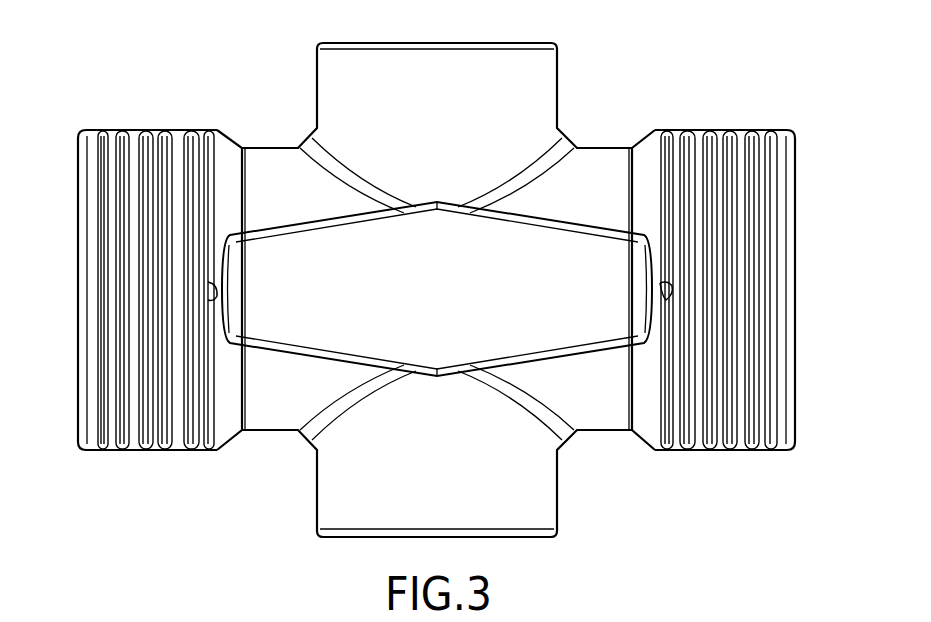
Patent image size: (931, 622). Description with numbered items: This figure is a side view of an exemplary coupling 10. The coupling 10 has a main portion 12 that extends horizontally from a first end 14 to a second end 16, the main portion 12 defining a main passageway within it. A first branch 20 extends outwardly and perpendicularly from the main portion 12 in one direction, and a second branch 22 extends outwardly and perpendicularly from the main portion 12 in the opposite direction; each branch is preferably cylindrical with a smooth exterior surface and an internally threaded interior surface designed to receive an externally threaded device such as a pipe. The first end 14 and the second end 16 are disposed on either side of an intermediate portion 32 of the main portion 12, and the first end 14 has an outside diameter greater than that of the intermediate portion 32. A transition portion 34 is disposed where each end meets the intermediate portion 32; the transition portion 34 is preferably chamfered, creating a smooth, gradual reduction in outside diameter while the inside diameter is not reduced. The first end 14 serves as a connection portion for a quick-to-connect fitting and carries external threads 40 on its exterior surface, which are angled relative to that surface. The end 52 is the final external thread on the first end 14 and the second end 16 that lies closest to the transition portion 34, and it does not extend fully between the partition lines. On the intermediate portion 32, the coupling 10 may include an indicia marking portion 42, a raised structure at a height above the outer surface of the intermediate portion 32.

The coupling 10 is at (713, 84).
The main portion 12 is at (262, 172).
The first end 14 is at (116, 129).
The second end 16 is at (735, 130).
The first branch 20 is at (536, 88).
The second branch 22 is at (527, 497).
The intermediate portion 32 is at (594, 168).
The transition portion 34 is at (228, 150).
The external threads 40 is at (116, 290).
The indicia marking portion 42 is at (424, 304).
The end 52 is at (217, 293).